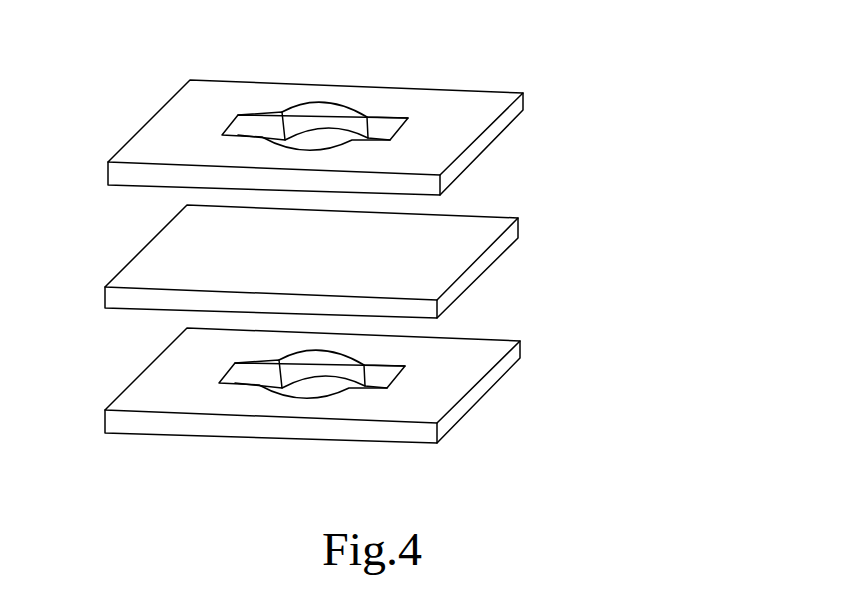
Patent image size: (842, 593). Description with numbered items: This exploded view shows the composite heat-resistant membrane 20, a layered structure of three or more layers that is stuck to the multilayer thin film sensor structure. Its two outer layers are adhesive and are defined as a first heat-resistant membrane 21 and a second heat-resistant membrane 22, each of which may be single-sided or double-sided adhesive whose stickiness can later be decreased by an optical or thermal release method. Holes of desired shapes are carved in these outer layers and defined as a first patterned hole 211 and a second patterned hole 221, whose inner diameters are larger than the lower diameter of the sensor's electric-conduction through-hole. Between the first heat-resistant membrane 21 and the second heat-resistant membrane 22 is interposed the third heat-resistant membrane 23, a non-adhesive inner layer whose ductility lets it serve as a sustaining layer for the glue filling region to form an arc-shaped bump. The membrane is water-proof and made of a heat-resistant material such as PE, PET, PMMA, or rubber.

The composite heat-resistant membrane 20 is at (593, 92).
The first heat-resistant membrane 21 is at (285, 112).
The first patterned hole 211 is at (357, 107).
The second heat-resistant membrane 22 is at (278, 411).
The second patterned hole 221 is at (285, 400).
The third heat-resistant membrane 23 is at (143, 253).